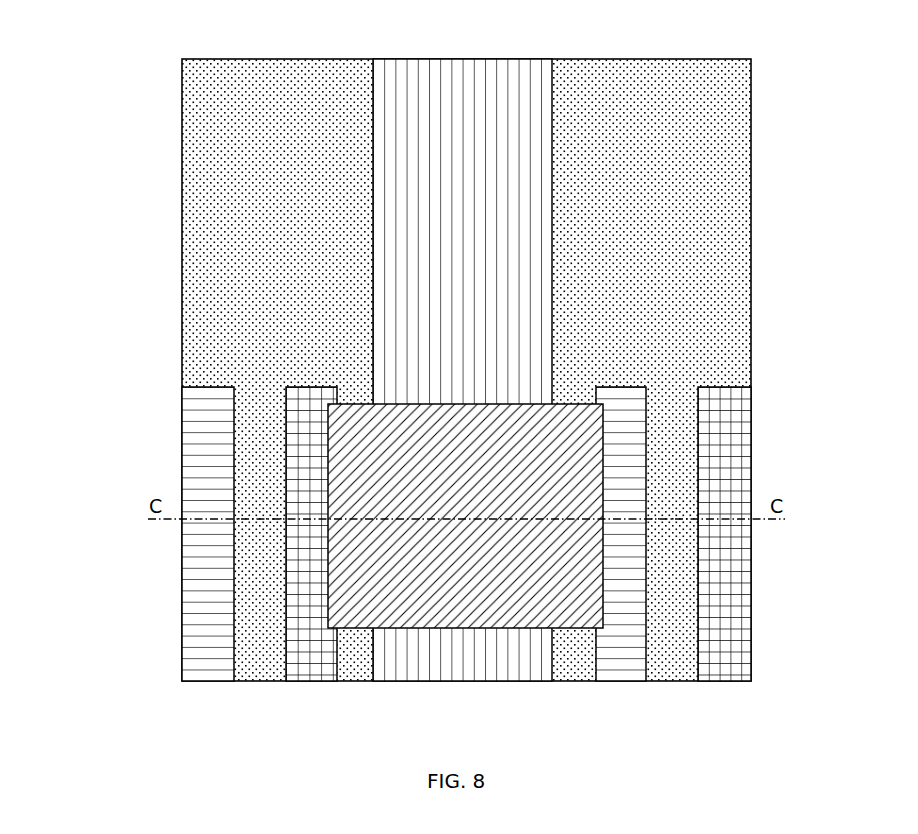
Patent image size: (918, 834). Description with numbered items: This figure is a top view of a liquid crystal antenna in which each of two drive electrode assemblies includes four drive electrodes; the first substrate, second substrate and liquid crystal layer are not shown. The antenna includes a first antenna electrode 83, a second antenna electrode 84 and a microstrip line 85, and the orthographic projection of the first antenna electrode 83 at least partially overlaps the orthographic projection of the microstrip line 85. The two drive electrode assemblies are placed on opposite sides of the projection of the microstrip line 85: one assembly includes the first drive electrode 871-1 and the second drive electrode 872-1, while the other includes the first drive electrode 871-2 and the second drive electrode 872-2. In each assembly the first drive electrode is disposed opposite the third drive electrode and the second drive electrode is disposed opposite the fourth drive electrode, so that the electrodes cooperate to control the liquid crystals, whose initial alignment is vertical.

The first antenna electrode 83 is at (500, 403).
The second antenna electrode 84 is at (692, 63).
The microstrip line 85 is at (432, 82).
The first drive electrode 871-1 is at (207, 681).
The first drive electrode 871-2 is at (619, 681).
The second drive electrode 872-1 is at (299, 681).
The second drive electrode 872-2 is at (712, 681).